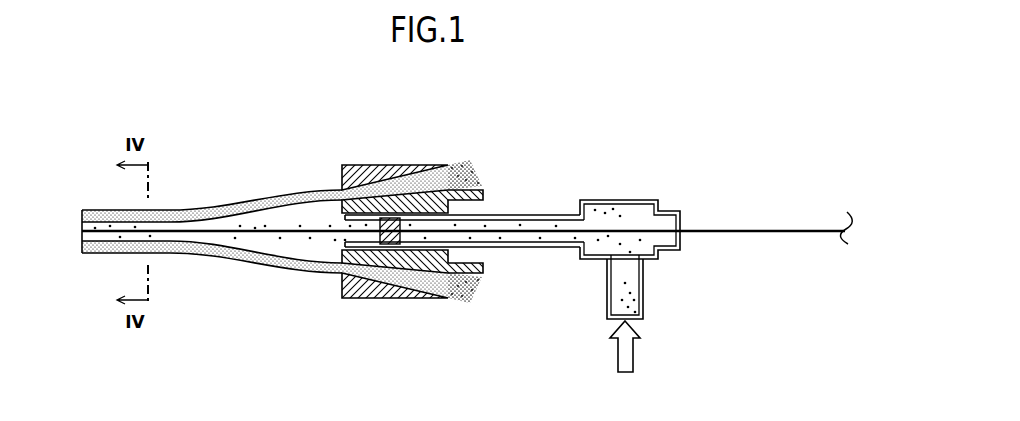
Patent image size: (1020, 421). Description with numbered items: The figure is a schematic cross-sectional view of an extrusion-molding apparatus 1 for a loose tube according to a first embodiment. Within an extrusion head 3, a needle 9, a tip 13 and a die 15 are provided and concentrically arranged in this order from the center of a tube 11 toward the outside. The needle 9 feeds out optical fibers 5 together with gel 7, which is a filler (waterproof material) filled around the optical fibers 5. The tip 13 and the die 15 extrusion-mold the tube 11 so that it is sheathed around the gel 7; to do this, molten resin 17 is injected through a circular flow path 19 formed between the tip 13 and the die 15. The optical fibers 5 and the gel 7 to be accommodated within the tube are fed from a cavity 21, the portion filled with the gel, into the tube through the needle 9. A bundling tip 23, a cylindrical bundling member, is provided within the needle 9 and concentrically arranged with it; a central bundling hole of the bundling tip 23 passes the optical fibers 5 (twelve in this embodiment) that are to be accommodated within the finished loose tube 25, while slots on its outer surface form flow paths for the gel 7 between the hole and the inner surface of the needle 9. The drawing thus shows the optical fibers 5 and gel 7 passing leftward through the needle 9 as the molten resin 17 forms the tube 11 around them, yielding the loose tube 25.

The extrusion-molding apparatus 1 is at (512, 207).
The extrusion head 3 is at (294, 225).
The optical fibers 5 is at (763, 229).
The gel 7 is at (297, 244).
The needle 9 is at (550, 214).
The tube 11 is at (192, 214).
The tip 13 is at (476, 188).
The die 15 is at (370, 164).
The molten resin 17 is at (452, 176).
The circular flow path 19 is at (422, 272).
The cavity 21 is at (597, 252).
The bundling tip 23 is at (383, 217).
The loose tube 25 is at (104, 205).